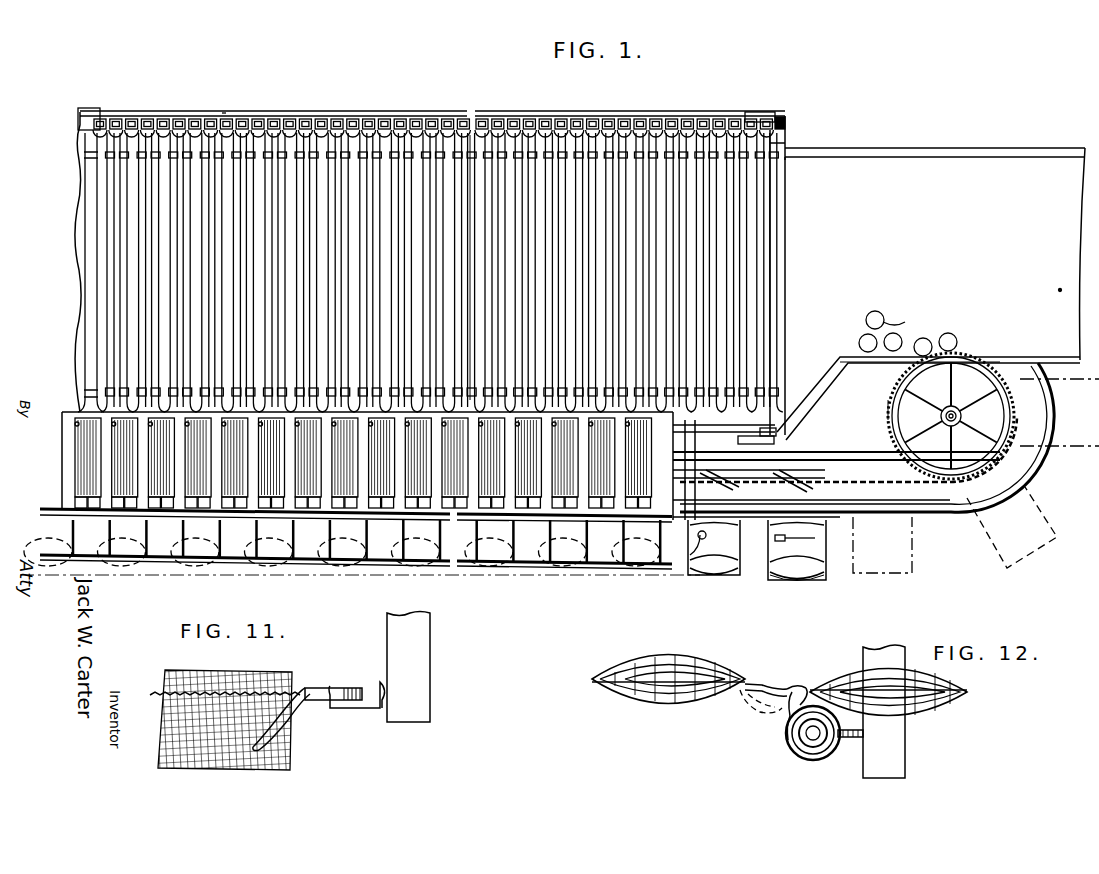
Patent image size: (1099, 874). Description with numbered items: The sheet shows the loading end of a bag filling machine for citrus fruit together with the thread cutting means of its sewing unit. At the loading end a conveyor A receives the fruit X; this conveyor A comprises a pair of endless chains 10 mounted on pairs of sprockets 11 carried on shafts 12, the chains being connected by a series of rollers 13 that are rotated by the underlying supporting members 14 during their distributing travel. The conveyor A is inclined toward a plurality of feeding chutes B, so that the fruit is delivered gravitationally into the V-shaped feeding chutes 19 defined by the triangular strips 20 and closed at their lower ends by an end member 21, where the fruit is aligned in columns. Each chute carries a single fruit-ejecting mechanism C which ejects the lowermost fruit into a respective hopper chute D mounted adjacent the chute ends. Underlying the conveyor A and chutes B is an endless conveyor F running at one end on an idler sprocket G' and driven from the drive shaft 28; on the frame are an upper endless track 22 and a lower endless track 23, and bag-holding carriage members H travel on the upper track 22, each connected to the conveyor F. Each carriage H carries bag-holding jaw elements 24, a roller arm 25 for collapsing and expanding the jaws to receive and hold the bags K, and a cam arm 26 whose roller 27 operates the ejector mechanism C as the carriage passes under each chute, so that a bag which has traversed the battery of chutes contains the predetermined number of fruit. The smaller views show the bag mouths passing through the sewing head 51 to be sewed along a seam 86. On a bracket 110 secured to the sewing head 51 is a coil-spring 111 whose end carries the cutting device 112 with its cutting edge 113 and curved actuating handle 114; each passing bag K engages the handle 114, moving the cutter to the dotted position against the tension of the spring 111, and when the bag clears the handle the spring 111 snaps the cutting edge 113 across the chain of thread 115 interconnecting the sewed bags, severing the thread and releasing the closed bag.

In FIG. 1, the endless chains 10 is at (135, 122).
In FIG. 1, the sprockets 11 is at (787, 122).
In FIG. 1, the shafts 12 is at (780, 112).
In FIG. 1, the rollers 13 is at (330, 136).
In FIG. 1, the supporting members 14 is at (535, 135).
In FIG. 1, the V-shaped feeding chutes 19 is at (386, 518).
In FIG. 1, the triangular strips 20 is at (312, 514).
In FIG. 1, the end member 21 is at (615, 522).
In FIG. 1, the upper endless track 22 is at (940, 510).
In FIG. 1, the lower endless track 23 is at (878, 448).
In FIG. 1, the bag-holding jaw elements 24 is at (812, 577).
In FIG. 1, the roller arm 25 is at (848, 460).
In FIG. 1, the cam arm 26 is at (707, 557).
In FIG. 1, the roller 27 is at (875, 545).
In FIG. 1, the drive shaft 28 is at (951, 416).
In FIG. 11, the sewing head 51 is at (412, 696).
In FIG. 12, the sewing head 51 is at (884, 660).
In FIG. 11, the seam 86 is at (253, 690).
In FIG. 11, the bracket 110 is at (358, 708).
In FIG. 12, the bracket 110 is at (848, 740).
In FIG. 11, the coil-spring 111 is at (335, 686).
In FIG. 12, the coil-spring 111 is at (800, 755).
In FIG. 12, the cutting device 112 is at (792, 686).
In FIG. 12, the cutting edge 113 is at (798, 690).
In FIG. 12, the curved actuating handle 114 is at (752, 712).
In FIG. 11, the chain of thread 115 is at (306, 686).
In FIG. 12, the chain of thread 115 is at (770, 686).
In FIG. 1, the conveyor A is at (231, 107).
In FIG. 1, the feeding chutes B is at (70, 420).
In FIG. 1, the fruit-ejecting mechanism C is at (78, 498).
In FIG. 1, the hopper chute D is at (518, 568).
In FIG. 1, the endless conveyor F is at (876, 379).
In FIG. 1, the idler sprocket G' is at (866, 411).
In FIG. 1, the bag-holding carriage members H is at (771, 585).
In FIG. 11, the bags K is at (285, 755).
In FIG. 12, the bags K is at (650, 700).
In FIG. 1, the fruit X is at (923, 335).